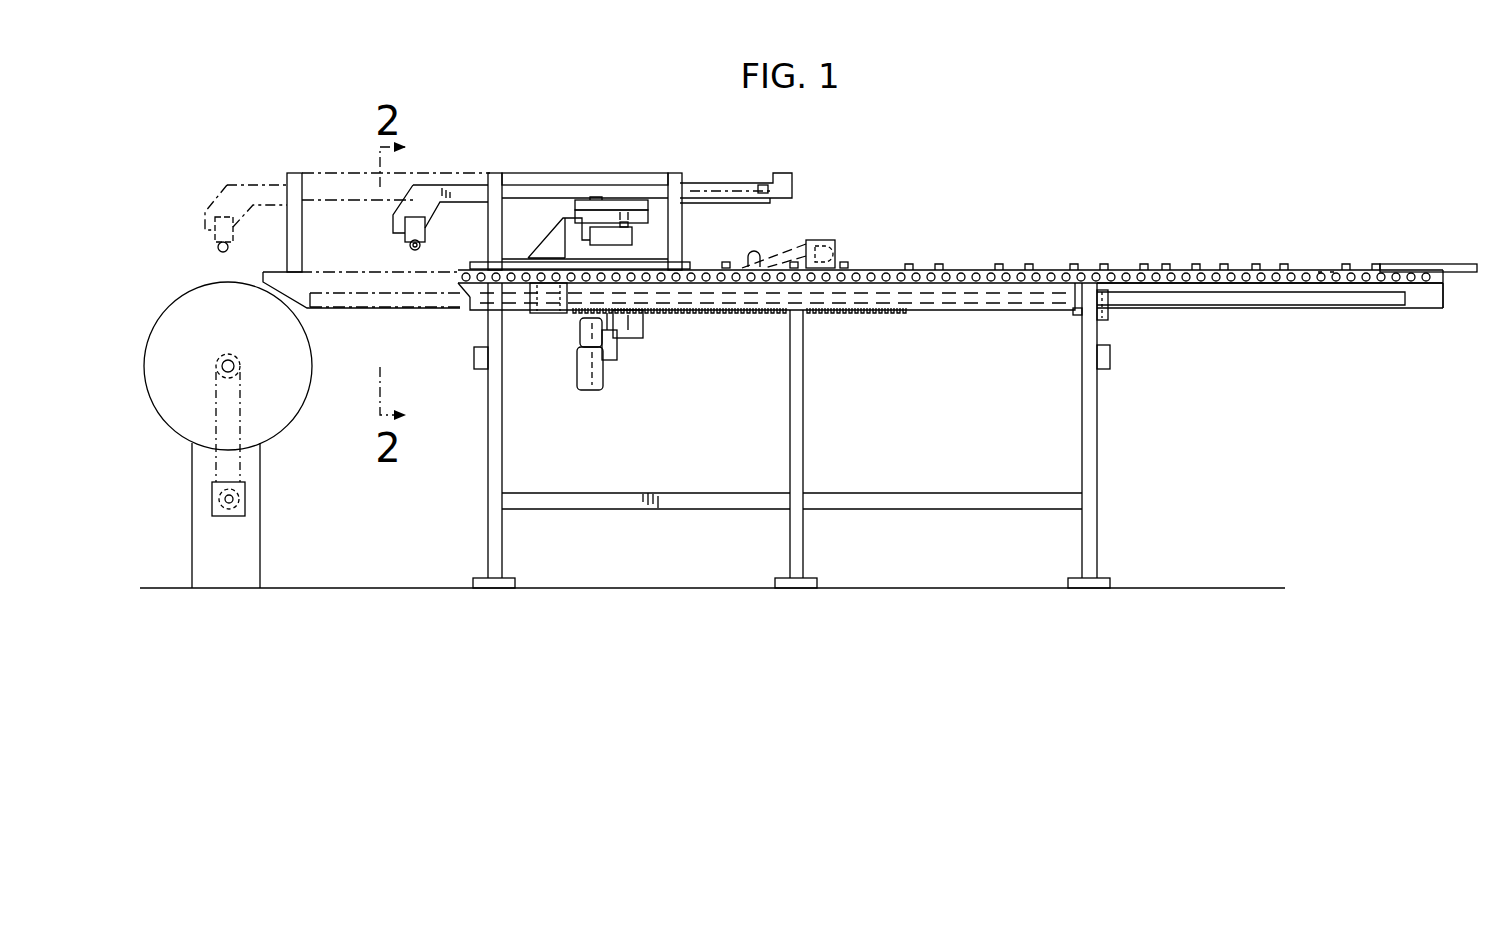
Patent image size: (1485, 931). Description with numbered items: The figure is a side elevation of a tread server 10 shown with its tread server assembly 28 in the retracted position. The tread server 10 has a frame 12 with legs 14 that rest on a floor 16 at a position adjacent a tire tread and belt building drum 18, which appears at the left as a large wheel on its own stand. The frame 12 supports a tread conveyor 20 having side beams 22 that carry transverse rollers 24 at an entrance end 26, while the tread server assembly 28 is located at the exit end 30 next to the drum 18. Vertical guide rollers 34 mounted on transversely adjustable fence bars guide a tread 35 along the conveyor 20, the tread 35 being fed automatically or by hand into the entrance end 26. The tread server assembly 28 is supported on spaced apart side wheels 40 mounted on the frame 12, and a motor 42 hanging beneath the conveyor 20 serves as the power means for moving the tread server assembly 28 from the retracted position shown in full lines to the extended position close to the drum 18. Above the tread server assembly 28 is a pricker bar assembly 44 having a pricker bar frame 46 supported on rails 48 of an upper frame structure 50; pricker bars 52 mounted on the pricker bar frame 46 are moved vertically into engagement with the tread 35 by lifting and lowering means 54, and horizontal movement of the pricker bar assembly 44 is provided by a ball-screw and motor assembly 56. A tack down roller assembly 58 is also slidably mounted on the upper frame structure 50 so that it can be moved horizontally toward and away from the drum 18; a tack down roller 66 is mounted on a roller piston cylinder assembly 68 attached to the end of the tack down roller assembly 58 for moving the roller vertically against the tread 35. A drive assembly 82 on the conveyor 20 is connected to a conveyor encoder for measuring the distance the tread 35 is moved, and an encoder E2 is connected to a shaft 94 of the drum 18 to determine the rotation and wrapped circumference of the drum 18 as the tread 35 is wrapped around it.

The tread server 10 is at (1050, 220).
The frame 12 is at (1100, 449).
The legs 14 is at (490, 545).
The floor 16 is at (1183, 588).
The tire tread and belt building drum 18 is at (272, 425).
The tread conveyor 20 is at (1143, 266).
The side beams 22 is at (1265, 268).
The transverse rollers 24 is at (1332, 270).
The entrance end 26 is at (1435, 268).
The tread server assembly 28 is at (520, 256).
The exit end 30 is at (462, 285).
The vertical guide rollers 34 is at (1250, 268).
The tread 35 is at (1407, 265).
The side wheels 40 is at (560, 318).
The motor 42 is at (590, 390).
The pricker bar assembly 44 is at (642, 234).
The pricker bar frame 46 is at (612, 210).
The rails 48 is at (695, 200).
The upper frame structure 50 is at (292, 172).
The pricker bars 52 is at (551, 237).
The lifting and lowering means 54 is at (630, 200).
The ball-screw and motor assembly 56 is at (723, 186).
The tack down roller assembly 58 is at (233, 183).
The tack down roller 66 is at (218, 249).
The roller piston cylinder assembly 68 is at (405, 226).
The drive assembly 82 is at (834, 240).
The shaft 94 is at (222, 372).
The encoder E2 is at (245, 508).